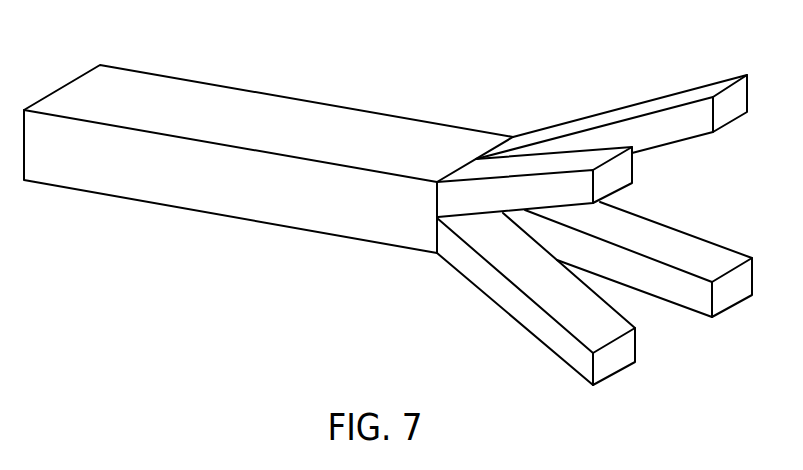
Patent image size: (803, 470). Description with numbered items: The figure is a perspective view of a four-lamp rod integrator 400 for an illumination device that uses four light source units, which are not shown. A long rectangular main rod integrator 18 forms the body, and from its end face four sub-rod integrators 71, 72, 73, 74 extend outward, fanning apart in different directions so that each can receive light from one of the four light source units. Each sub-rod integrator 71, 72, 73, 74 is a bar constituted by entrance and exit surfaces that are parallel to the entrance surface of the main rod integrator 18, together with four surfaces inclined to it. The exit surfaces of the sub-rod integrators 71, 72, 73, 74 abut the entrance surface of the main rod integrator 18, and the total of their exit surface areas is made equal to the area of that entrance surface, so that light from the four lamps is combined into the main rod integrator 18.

The four-lamp rod integrator 400 is at (212, 282).
The main rod integrator 18 is at (212, 100).
The sub-rod integrator 71 is at (640, 107).
The sub-rod integrator 72 is at (537, 163).
The sub-rod integrator 73 is at (717, 255).
The sub-rod integrator 74 is at (530, 278).